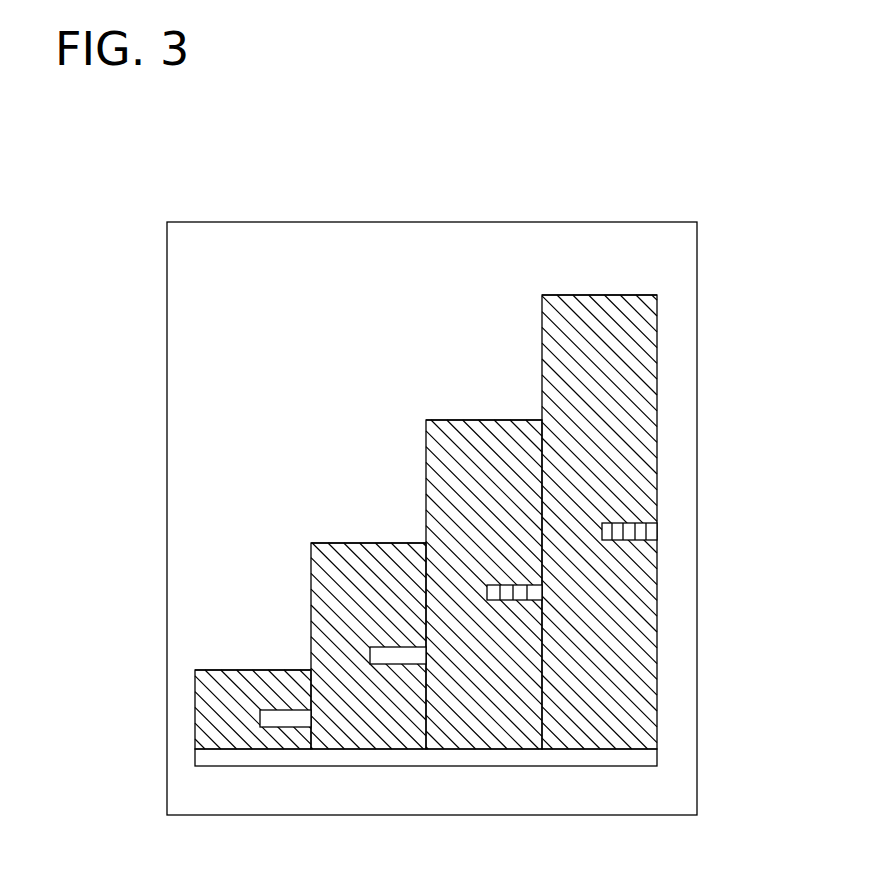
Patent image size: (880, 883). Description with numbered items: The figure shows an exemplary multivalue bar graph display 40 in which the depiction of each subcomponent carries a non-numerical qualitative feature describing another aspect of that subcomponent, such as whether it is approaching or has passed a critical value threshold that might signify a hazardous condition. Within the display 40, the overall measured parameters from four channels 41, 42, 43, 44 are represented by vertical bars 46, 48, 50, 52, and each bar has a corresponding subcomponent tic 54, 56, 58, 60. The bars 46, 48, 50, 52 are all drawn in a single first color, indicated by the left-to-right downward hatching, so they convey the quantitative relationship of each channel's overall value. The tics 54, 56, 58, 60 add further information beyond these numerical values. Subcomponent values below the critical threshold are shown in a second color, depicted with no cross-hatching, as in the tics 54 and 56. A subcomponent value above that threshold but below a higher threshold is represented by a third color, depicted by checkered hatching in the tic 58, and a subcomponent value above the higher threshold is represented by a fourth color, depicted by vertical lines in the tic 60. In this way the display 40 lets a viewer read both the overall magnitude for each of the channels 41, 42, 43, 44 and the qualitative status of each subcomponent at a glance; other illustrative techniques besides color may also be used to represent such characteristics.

The display 40 is at (88, 303).
The channel 41 is at (253, 709).
The channel 42 is at (368, 646).
The channel 43 is at (484, 584).
The channel 44 is at (599, 522).
The vertical bar 46 is at (208, 670).
The vertical bar 48 is at (367, 543).
The vertical bar 50 is at (485, 420).
The vertical bar 52 is at (613, 295).
The tic 54 is at (278, 718).
The tic 56 is at (392, 655).
The tic 58 is at (520, 588).
The tic 60 is at (630, 523).